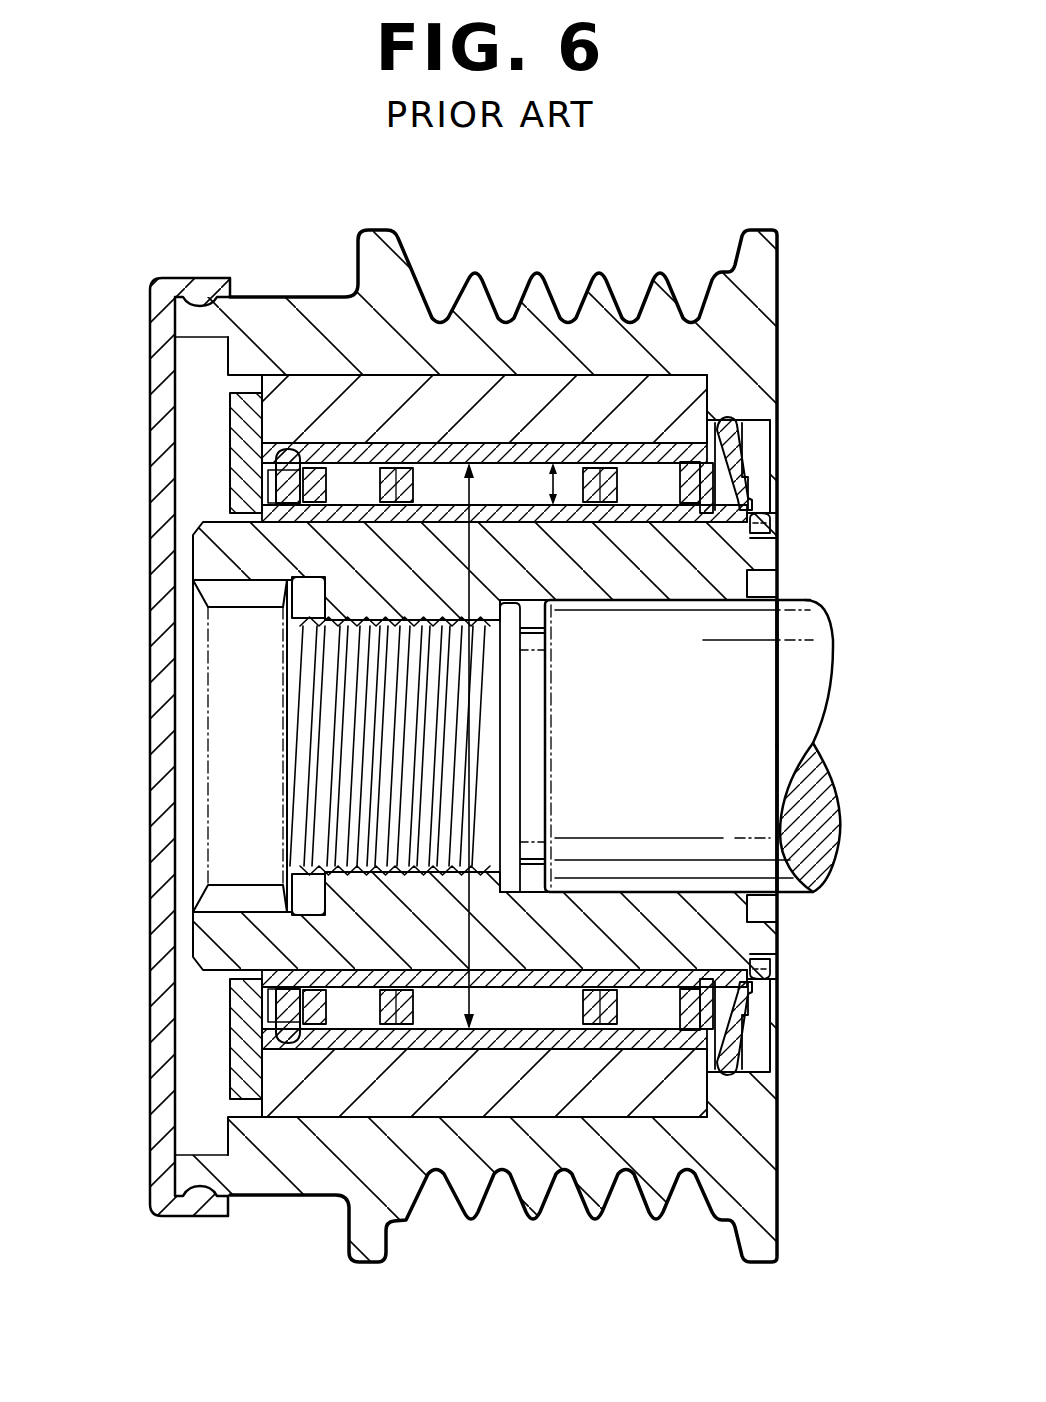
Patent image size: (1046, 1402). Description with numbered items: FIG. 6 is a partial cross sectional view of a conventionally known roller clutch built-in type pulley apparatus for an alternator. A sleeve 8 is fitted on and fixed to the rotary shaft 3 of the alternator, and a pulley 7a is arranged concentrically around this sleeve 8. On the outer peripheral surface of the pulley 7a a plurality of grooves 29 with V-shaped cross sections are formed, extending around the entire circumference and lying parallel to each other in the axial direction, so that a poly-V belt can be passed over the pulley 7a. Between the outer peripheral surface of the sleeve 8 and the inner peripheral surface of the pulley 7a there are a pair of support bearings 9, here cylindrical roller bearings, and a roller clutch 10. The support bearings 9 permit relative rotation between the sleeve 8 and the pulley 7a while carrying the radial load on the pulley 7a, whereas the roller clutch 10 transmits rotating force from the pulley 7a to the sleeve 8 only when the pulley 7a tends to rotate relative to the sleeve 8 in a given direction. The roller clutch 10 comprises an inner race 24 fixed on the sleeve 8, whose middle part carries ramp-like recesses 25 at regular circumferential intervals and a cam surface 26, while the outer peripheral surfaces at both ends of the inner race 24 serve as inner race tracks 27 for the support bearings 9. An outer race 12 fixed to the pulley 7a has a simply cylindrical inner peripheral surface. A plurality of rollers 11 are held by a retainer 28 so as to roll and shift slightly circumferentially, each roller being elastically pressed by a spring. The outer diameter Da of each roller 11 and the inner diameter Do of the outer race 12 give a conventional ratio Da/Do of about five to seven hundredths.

The rotary shaft 3 is at (793, 664).
The pulley 7a is at (760, 247).
The sleeve 8 is at (687, 567).
The support bearings 9 is at (340, 464).
The roller clutch 10 is at (509, 446).
The rollers 11 is at (436, 468).
The outer race 12 is at (553, 462).
The inner race 24 is at (607, 522).
The recesses 25 is at (395, 543).
The cam surface 26 is at (546, 522).
The inner race tracks 27 is at (300, 479).
The retainer 28 is at (601, 464).
The grooves 29 is at (533, 1212).
The outer diameter of roller Da is at (728, 487).
The inner diameter of outer race Do is at (465, 930).